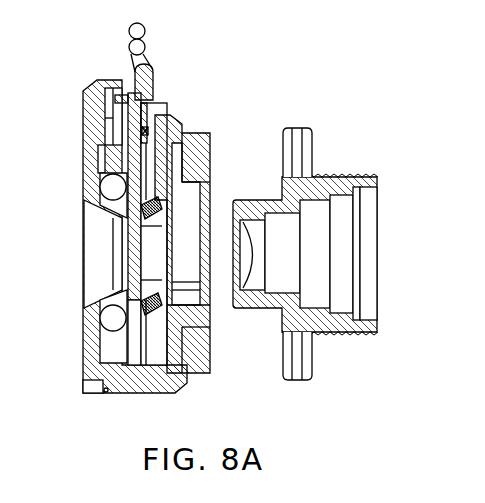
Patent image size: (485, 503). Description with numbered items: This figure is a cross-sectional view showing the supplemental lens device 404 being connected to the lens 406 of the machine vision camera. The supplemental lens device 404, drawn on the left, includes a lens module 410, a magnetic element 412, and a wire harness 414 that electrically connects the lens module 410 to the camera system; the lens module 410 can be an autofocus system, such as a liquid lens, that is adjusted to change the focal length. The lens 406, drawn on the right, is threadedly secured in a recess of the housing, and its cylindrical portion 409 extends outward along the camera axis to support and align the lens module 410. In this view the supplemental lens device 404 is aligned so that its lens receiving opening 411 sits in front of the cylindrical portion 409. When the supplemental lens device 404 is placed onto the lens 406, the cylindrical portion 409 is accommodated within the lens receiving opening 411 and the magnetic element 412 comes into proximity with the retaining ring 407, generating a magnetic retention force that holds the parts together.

The supplemental lens device 404 is at (127, 204).
The lens 406 is at (311, 228).
The retaining ring 407 is at (300, 127).
The cylindrical portion 409 is at (263, 309).
The lens module 410 is at (90, 167).
The lens receiving opening 411 is at (185, 305).
The magnetic element 412 is at (197, 133).
The wire harness 414 is at (147, 33).